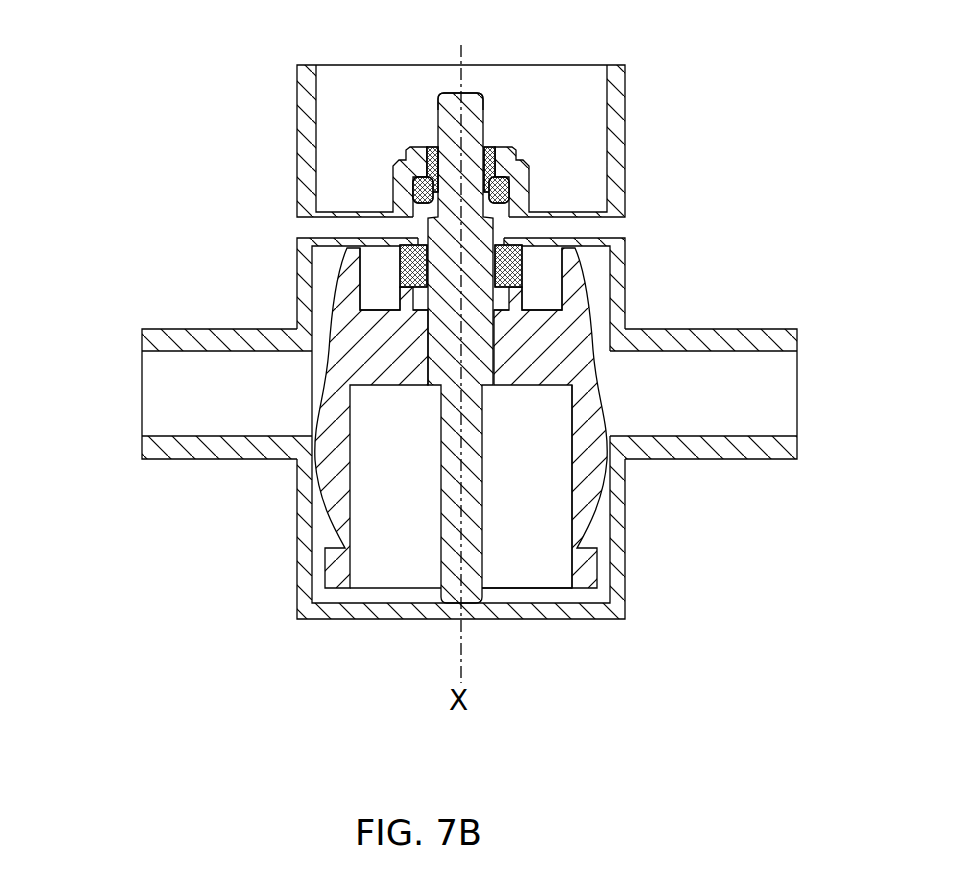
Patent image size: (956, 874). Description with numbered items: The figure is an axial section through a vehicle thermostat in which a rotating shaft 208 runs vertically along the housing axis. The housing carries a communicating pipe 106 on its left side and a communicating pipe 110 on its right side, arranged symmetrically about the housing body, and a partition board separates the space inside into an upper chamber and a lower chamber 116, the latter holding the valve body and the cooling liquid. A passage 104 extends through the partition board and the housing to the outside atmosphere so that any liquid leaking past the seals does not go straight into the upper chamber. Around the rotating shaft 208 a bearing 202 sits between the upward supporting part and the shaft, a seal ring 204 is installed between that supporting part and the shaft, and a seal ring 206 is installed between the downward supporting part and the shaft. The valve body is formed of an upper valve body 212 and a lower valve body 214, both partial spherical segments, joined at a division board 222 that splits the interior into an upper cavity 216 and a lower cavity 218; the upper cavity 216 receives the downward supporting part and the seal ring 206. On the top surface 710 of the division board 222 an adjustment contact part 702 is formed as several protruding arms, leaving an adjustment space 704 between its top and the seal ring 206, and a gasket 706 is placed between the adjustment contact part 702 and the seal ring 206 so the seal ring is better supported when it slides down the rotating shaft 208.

The passage 104 is at (627, 228).
The communicating pipe 106 is at (140, 333).
The communicating pipe 110 is at (712, 329).
The lower chamber 116 is at (301, 532).
The bearing 202 is at (489, 140).
The seal ring 204 is at (498, 165).
The seal ring 206 is at (512, 216).
The rotating shaft 208 is at (476, 93).
The upper valve body 212 is at (333, 297).
The lower valve body 214 is at (602, 425).
The upper cavity 216 is at (543, 268).
The lower cavity 218 is at (545, 577).
The division board 222 is at (350, 357).
The adjustment contact part 702 is at (508, 312).
The adjustment space 704 is at (400, 284).
The gasket 706 is at (516, 300).
The top surface 710 is at (376, 315).